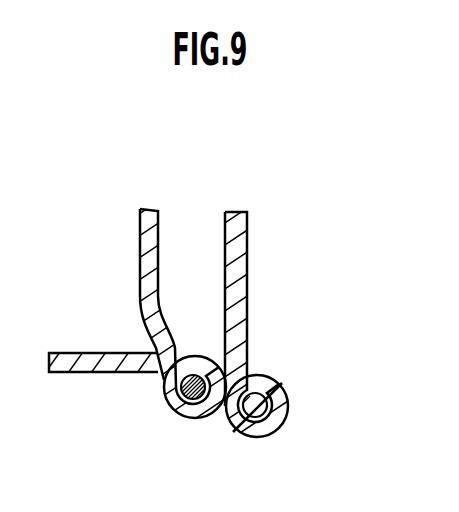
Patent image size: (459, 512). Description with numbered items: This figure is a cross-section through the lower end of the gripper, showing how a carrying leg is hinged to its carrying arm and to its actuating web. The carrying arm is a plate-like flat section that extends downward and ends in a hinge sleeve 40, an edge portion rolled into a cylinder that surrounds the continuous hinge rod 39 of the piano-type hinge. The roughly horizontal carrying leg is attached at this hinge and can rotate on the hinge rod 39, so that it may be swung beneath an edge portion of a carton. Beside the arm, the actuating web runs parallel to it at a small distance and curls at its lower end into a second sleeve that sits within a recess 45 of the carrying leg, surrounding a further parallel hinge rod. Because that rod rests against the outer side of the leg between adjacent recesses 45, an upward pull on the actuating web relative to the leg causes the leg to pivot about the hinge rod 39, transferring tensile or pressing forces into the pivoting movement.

The recesses 45 is at (148, 373).
The continuous hinge rod 39 is at (240, 430).
The hinge sleeve 40 is at (287, 422).